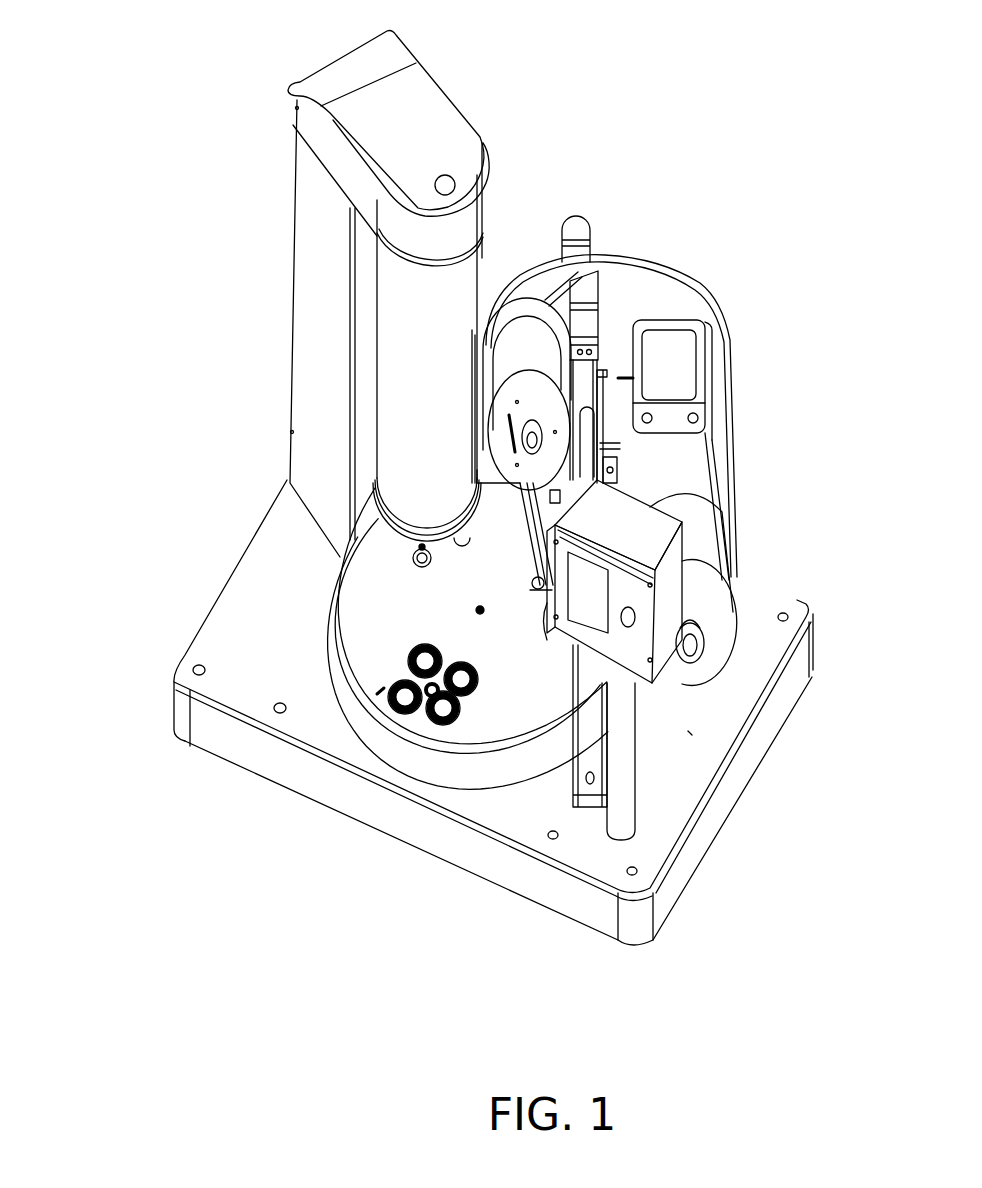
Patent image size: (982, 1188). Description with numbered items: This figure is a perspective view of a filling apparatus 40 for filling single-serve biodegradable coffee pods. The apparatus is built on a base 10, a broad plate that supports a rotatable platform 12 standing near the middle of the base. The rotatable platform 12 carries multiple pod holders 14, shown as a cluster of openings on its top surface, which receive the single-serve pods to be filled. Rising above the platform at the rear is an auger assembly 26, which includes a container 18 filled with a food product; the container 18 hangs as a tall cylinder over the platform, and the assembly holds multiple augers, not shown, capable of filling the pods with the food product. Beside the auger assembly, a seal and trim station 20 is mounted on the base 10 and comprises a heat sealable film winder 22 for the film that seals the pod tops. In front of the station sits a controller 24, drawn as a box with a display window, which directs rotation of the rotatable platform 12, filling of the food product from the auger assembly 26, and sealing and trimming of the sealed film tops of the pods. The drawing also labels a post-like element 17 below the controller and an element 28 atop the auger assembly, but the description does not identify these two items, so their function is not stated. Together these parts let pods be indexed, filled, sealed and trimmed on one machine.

The base 10 is at (215, 628).
The rotatable platform 12 is at (358, 630).
The pod holders 14 is at (405, 693).
The support post 17 is at (572, 707).
The container 18 is at (470, 280).
The seal and trim station 20 is at (647, 272).
The heat sealable film winder 22 is at (700, 468).
The controller 24 is at (667, 590).
The auger assembly 26 is at (325, 73).
The arm head 28 is at (428, 103).
The filling apparatus 40 is at (141, 432).